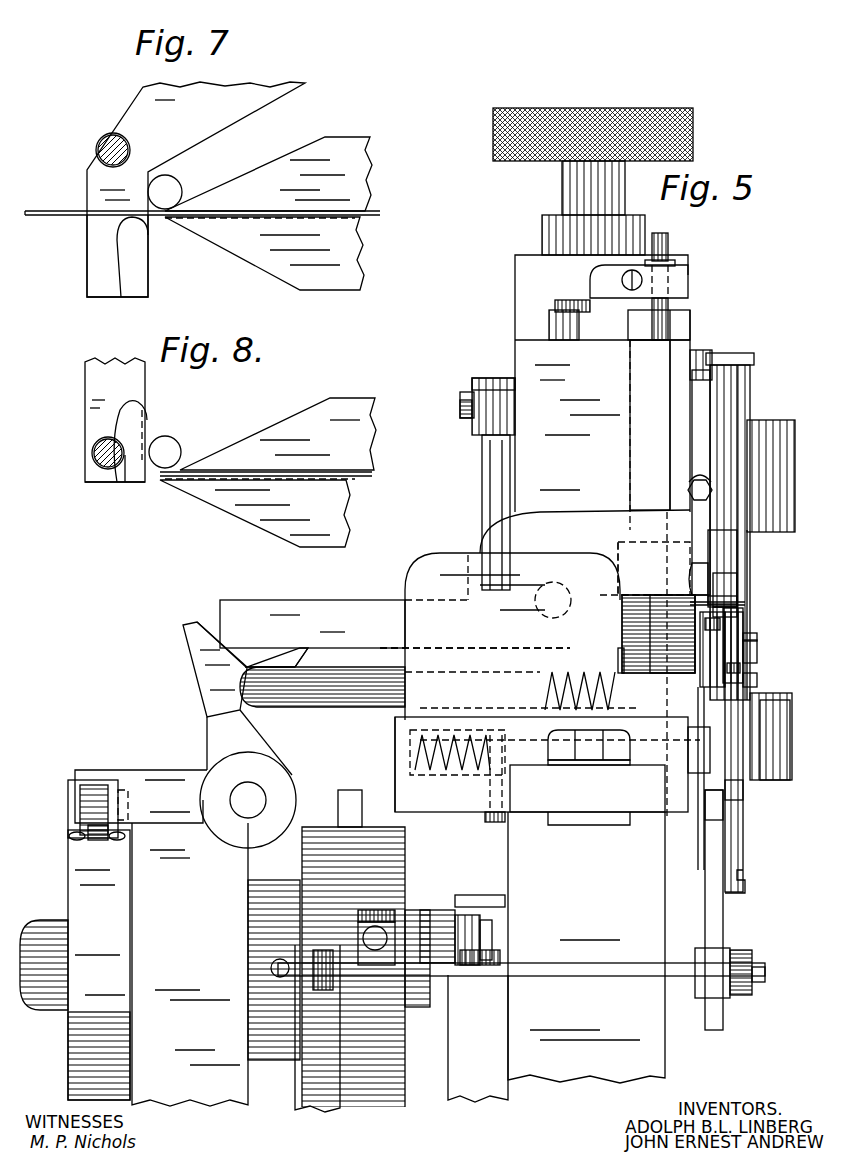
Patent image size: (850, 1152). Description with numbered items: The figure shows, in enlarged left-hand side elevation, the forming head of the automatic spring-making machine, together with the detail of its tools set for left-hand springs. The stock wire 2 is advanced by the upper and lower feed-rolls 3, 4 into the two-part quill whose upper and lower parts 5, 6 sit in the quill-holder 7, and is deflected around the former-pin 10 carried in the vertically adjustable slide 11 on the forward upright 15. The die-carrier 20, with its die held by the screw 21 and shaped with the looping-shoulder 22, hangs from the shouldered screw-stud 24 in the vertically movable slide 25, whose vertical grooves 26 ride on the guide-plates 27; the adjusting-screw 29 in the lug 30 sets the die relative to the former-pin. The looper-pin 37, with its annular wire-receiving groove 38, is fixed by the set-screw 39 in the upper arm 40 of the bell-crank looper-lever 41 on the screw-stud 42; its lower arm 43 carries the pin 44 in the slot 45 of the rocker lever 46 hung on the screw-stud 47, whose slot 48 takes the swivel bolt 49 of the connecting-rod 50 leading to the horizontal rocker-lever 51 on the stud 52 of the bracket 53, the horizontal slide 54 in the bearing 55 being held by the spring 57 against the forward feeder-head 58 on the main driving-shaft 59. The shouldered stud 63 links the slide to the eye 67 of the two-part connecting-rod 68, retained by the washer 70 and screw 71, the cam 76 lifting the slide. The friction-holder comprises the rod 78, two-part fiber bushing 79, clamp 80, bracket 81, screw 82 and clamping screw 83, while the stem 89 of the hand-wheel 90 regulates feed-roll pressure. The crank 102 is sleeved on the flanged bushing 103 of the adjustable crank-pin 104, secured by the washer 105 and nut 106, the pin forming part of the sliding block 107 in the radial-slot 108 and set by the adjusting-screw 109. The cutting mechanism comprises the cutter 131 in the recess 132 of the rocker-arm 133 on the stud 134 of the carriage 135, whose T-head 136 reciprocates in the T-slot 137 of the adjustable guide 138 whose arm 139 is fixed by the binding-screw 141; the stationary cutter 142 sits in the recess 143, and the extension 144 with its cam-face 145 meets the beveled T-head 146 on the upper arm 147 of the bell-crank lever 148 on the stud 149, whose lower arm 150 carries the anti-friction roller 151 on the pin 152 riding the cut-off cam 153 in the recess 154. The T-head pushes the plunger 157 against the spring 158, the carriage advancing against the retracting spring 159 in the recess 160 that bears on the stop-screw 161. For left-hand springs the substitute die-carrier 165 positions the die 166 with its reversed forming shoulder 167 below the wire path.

In FIG. 7, the stock wire 2 is at (377, 216).
In FIG. 8, the stock wire 2 is at (366, 478).
In FIG. 5, the stock wire 2 is at (747, 603).
In FIG. 5, the upper feed-roll 3 is at (749, 548).
In FIG. 5, the lower feed-roll 4 is at (744, 819).
In FIG. 7, the upper part of the quill 5 is at (264, 253).
In FIG. 8, the upper part of the quill 5 is at (255, 513).
In FIG. 5, the upper part of the quill 5 is at (740, 592).
In FIG. 7, the lower part of the quill 6 is at (268, 174).
In FIG. 8, the lower part of the quill 6 is at (278, 434).
In FIG. 5, the lower part of the quill 6 is at (740, 610).
In FIG. 5, the quill-holder 7 is at (738, 567).
In FIG. 7, the former-pin 10 is at (174, 189).
In FIG. 8, the former-pin 10 is at (170, 444).
In FIG. 5, the former-pin 10 is at (693, 600).
In FIG. 5, the vertically adjustable slide 11 is at (668, 608).
In FIG. 5, the forward upright 15 is at (602, 383).
In FIG. 5, the die-carrier 20 is at (692, 453).
In FIG. 5, the screw 21 is at (690, 572).
In FIG. 5, the looping-shoulder 22 is at (714, 602).
In FIG. 5, the shouldered screw-stud 24 is at (710, 389).
In FIG. 5, the vertically movable slide 25 is at (691, 330).
In FIG. 5, the vertical grooves 26 is at (670, 320).
In FIG. 5, the guide-plates 27 is at (660, 357).
In FIG. 5, the adjusting-screw 29 is at (688, 491).
In FIG. 5, the lug 30 is at (690, 479).
In FIG. 7, the looper-pin 37 is at (124, 141).
In FIG. 8, the looper-pin 37 is at (95, 459).
In FIG. 5, the looper-pin 37 is at (722, 624).
In FIG. 7, the annular wire-receiving groove 38 is at (130, 151).
In FIG. 8, the annular wire-receiving groove 38 is at (104, 470).
In FIG. 5, the annular wire-receiving groove 38 is at (745, 637).
In FIG. 5, the set-screw 39 is at (742, 670).
In FIG. 5, the upper arm of looper-lever 40 is at (758, 645).
In FIG. 5, the bell-crank looper-lever 41 is at (758, 681).
In FIG. 5, the screw-stud 42 is at (758, 653).
In FIG. 5, the lower arm of looper-lever 43 is at (760, 720).
In FIG. 5, the pin 44 is at (700, 757).
In FIG. 5, the slot 45 is at (745, 794).
In FIG. 5, the rocker lever 46 is at (712, 806).
In FIG. 5, the screw-stud 47 is at (746, 882).
In FIG. 5, the slot 48 is at (724, 930).
In FIG. 5, the swivel bolt 49 is at (753, 956).
In FIG. 5, the connecting-rod 50 is at (740, 990).
In FIG. 5, the horizontal rocker-lever 51 is at (603, 975).
In FIG. 5, the stud 52 is at (502, 955).
In FIG. 5, the bracket 53 is at (478, 1038).
In FIG. 5, the horizontal slide 54 is at (310, 956).
In FIG. 5, the bearing 55 is at (317, 1028).
In FIG. 5, the spring 57 is at (272, 972).
In FIG. 5, the forward feeder-head 58 is at (410, 876).
In FIG. 5, the main driving-shaft 59 is at (60, 1002).
In FIG. 5, the shouldered stud 63 is at (492, 382).
In FIG. 5, the eye 67 is at (496, 378).
In FIG. 5, the two-part connecting-rod 68 is at (482, 478).
In FIG. 5, the washer 70 is at (460, 390).
In FIG. 5, the screw 71 is at (462, 414).
In FIG. 5, the cam 76 is at (350, 792).
In FIG. 5, the rod 78 is at (669, 245).
In FIG. 5, the two-part fiber bushing 79 is at (676, 263).
In FIG. 5, the clamp 80 is at (660, 281).
In FIG. 5, the bracket 81 is at (549, 325).
In FIG. 5, the screw 82 is at (557, 302).
In FIG. 5, the clamping screw 83 is at (622, 280).
In FIG. 5, the stem 89 is at (562, 188).
In FIG. 5, the hand-wheel 90 is at (499, 161).
In FIG. 5, the crank 102 is at (458, 895).
In FIG. 5, the flanged bushing 103 is at (446, 912).
In FIG. 5, the adjustable crank-pin 104 is at (416, 985).
In FIG. 5, the washer 105 is at (470, 915).
In FIG. 5, the nut 106 is at (483, 928).
In FIG. 5, the sliding block 107 is at (358, 920).
In FIG. 5, the radial-slot 108 is at (360, 940).
In FIG. 5, the adjusting-screw 109 is at (380, 950).
In FIG. 5, the cutter 131 is at (622, 580).
In FIG. 5, the recess 132 is at (634, 540).
In FIG. 5, the rocker-arm 133 is at (585, 531).
In FIG. 5, the stud 134 is at (538, 603).
In FIG. 5, the carriage 135 is at (476, 656).
In FIG. 5, the T-head 136 is at (790, 745).
In FIG. 5, the T-slot 137 is at (552, 770).
In FIG. 5, the adjustable guide 138 is at (600, 775).
In FIG. 5, the arm 139 is at (586, 947).
In FIG. 5, the binding-screw 141 is at (600, 750).
In FIG. 5, the stationary cutter 142 is at (630, 612).
In FIG. 5, the recess 143 is at (621, 668).
In FIG. 5, the extension 144 is at (312, 624).
In FIG. 5, the cam-face 145 is at (262, 662).
In FIG. 5, the beveled T-head 146 is at (200, 678).
In FIG. 5, the upper arm 147 is at (249, 742).
In FIG. 5, the bell-crank lever 148 is at (290, 770).
In FIG. 5, the stud 149 is at (242, 812).
In FIG. 5, the lower arm 150 is at (141, 796).
In FIG. 5, the anti-friction roller 151 is at (105, 784).
In FIG. 5, the pin 152 is at (128, 790).
In FIG. 5, the cut-off cam 153 is at (78, 842).
In FIG. 5, the recess 154 is at (96, 842).
In FIG. 5, the plunger 157 is at (345, 690).
In FIG. 5, the spring 158 is at (545, 690).
In FIG. 5, the retracting spring 159 is at (455, 770).
In FIG. 5, the recess 160 is at (447, 733).
In FIG. 5, the stop-screw 161 is at (488, 800).
In FIG. 7, the die-carrier 165 is at (196, 189).
In FIG. 8, the die-carrier 165 is at (115, 420).
In FIG. 5, the die-carrier 165 is at (82, 1058).
In FIG. 7, the die 166 is at (122, 293).
In FIG. 8, the die 166 is at (124, 478).
In FIG. 7, the forming shoulder 167 is at (150, 262).
In FIG. 8, the forming shoulder 167 is at (136, 428).